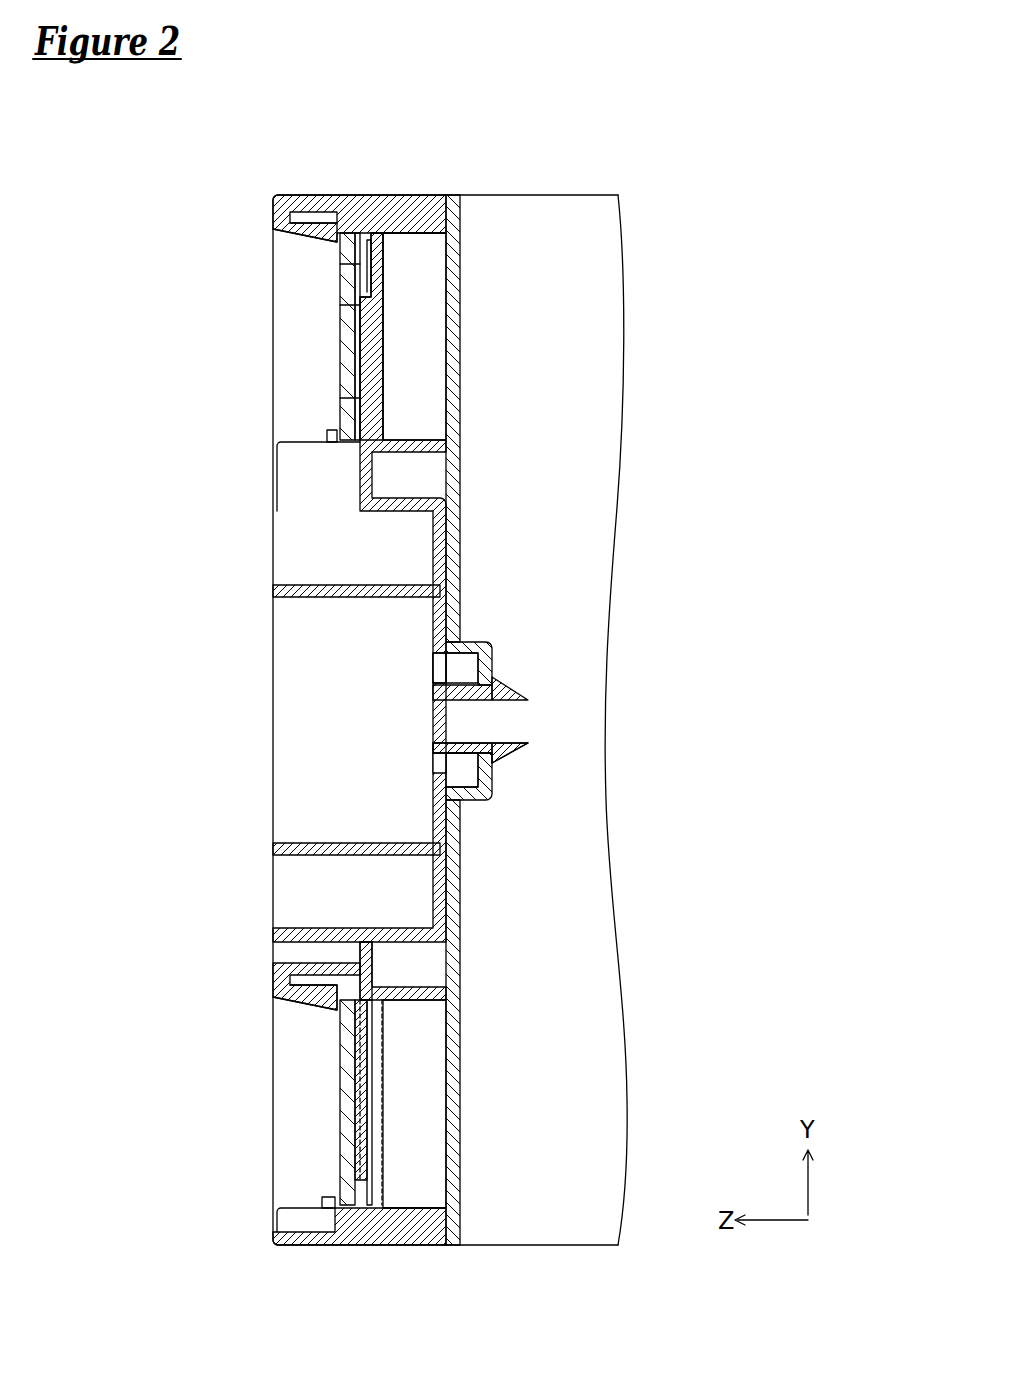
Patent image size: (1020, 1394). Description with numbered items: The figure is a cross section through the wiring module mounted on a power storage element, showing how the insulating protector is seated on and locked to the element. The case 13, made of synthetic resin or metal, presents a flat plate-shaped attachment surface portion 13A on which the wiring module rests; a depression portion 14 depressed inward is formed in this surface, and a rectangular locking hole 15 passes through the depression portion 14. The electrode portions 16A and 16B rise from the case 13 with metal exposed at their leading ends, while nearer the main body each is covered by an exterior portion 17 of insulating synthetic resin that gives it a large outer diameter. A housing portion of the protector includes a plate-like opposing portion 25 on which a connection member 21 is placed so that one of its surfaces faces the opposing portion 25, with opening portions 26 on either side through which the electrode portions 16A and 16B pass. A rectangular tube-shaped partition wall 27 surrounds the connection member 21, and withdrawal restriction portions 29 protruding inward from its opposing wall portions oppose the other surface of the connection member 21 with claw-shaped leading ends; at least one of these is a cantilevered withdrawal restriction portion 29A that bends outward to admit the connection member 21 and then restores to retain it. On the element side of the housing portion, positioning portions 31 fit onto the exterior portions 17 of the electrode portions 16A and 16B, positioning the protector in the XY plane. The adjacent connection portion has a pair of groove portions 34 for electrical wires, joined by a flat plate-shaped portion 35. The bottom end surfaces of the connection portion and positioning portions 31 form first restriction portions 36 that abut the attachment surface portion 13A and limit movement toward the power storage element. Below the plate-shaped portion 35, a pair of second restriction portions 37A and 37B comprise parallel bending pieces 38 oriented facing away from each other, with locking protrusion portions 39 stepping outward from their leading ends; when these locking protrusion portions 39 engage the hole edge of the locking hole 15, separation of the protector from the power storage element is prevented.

The case 13 is at (543, 167).
The attachment surface portion 13A is at (457, 602).
The depression portion 14 is at (500, 656).
The locking hole 15 is at (433, 753).
The electrode portion 16A is at (353, 1148).
The electrode portion 16B is at (353, 323).
The exterior portion 17 is at (403, 265).
The connection member 21 is at (343, 398).
The opposing portion 25 is at (363, 350).
The opening portion 26 is at (340, 1030).
The partition wall 27 is at (275, 213).
The withdrawal restriction portion 29 is at (327, 433).
The withdrawal restriction portion 29A is at (310, 240).
The positioning portion 31 is at (408, 242).
The groove portion 34 is at (332, 599).
The plate-shaped portion 35 is at (437, 661).
The first restriction portion 36 is at (460, 208).
The second restriction portion 37A is at (652, 730).
The second restriction portion 37B is at (569, 725).
The bending piece 38 is at (472, 703).
The locking protrusion portion 39 is at (510, 677).